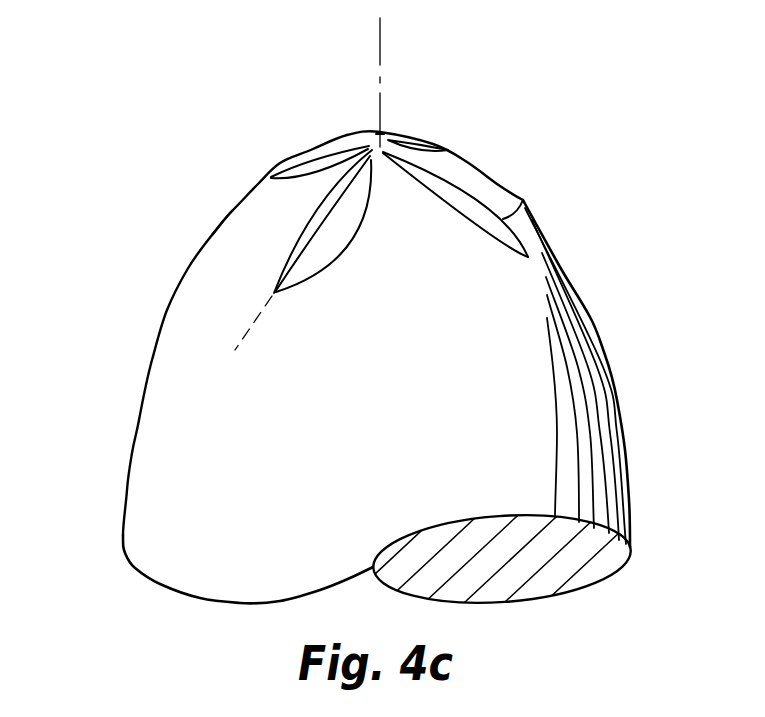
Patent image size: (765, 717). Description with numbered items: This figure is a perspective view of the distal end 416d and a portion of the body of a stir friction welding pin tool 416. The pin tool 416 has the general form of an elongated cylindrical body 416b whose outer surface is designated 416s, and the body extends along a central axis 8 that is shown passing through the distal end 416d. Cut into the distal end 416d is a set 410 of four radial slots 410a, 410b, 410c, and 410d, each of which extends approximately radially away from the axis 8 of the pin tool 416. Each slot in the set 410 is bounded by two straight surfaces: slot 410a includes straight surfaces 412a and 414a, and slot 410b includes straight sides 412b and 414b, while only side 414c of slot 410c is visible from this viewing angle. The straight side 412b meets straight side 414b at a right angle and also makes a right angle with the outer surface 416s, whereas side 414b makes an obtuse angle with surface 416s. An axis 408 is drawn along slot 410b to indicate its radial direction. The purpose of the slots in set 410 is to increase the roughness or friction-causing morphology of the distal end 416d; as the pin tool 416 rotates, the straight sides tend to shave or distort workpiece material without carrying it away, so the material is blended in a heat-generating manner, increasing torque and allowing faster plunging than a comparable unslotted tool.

The axis 8 is at (382, 32).
The nozzle axis 408 is at (233, 347).
The set of radial slots 410 is at (270, 70).
The radial slot 410a is at (296, 162).
The radial slot 410b is at (305, 279).
The radial slot 410c is at (518, 205).
The radial slot 410d is at (429, 118).
The straight surface 412a is at (332, 148).
The straight side 412b is at (297, 238).
The straight surface 414a is at (240, 221).
The straight side 414b is at (323, 242).
The straight side 414c is at (477, 224).
The pin tool 416 is at (128, 452).
The cylindrical body 416b is at (627, 487).
The distal end 416d is at (124, 201).
The outer surface 416s is at (592, 325).